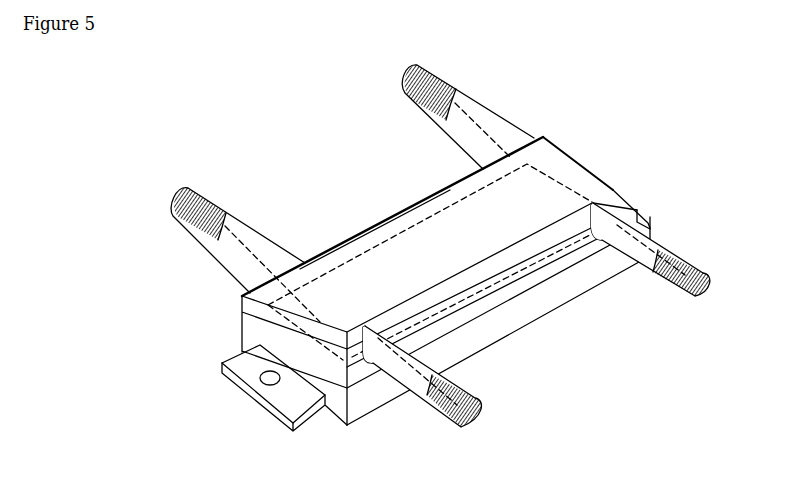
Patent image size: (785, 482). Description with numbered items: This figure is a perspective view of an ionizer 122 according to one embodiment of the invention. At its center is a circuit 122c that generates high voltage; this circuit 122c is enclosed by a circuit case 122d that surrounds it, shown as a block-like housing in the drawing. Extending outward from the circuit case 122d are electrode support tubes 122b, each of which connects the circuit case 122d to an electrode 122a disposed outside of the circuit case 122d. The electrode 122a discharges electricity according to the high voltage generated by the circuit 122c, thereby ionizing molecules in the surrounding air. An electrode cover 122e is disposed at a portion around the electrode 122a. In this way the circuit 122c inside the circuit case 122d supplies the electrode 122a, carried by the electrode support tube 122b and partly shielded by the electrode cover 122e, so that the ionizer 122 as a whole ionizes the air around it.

The ionizer 122 is at (160, 75).
The electrode 122a is at (688, 257).
The electrode support tube 122b is at (653, 221).
The circuit 122c is at (510, 278).
The circuit case 122d is at (553, 163).
The electrode cover 122e is at (684, 285).